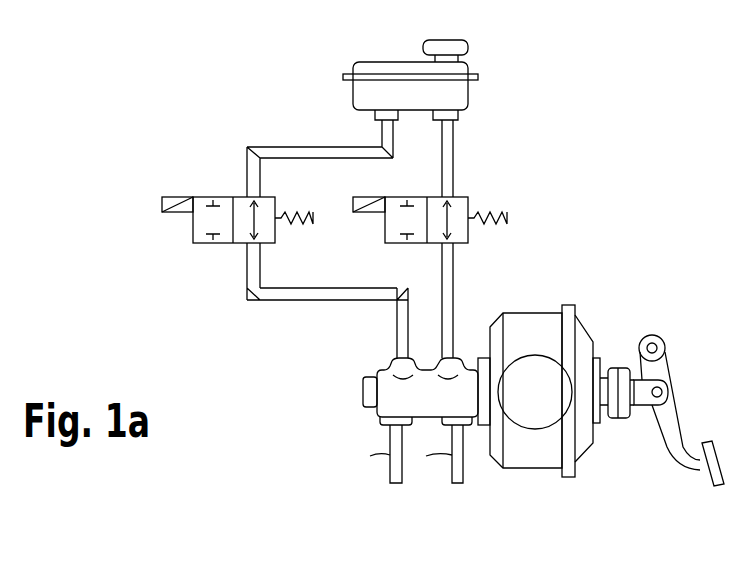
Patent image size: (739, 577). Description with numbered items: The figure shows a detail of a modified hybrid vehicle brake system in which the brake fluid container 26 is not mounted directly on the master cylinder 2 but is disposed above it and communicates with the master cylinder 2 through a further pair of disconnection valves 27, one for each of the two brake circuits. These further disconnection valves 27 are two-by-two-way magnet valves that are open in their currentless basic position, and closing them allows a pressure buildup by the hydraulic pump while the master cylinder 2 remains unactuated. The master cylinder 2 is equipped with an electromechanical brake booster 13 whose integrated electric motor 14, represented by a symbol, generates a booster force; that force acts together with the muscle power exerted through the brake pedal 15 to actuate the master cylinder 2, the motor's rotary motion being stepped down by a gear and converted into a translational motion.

The master cylinder 2 is at (390, 393).
The brake booster 13 is at (532, 453).
The electric motor 14 is at (535, 352).
The brake pedal 15 is at (672, 435).
The brake fluid container 26 is at (378, 95).
The further disconnection valves 27 is at (200, 225).